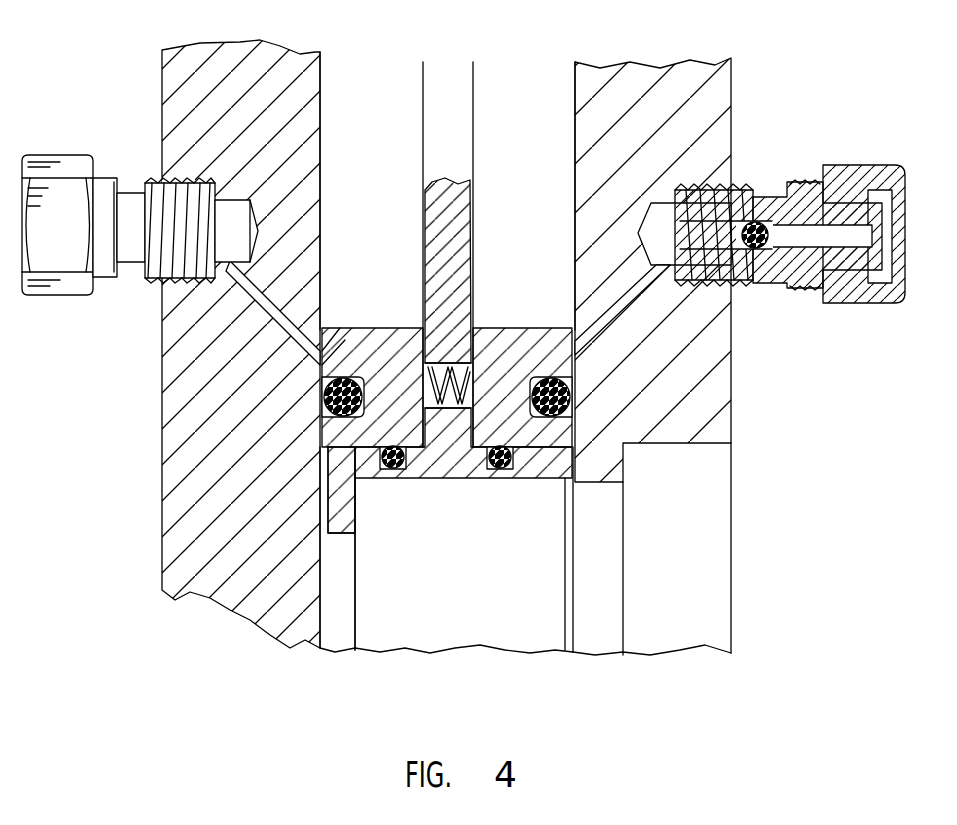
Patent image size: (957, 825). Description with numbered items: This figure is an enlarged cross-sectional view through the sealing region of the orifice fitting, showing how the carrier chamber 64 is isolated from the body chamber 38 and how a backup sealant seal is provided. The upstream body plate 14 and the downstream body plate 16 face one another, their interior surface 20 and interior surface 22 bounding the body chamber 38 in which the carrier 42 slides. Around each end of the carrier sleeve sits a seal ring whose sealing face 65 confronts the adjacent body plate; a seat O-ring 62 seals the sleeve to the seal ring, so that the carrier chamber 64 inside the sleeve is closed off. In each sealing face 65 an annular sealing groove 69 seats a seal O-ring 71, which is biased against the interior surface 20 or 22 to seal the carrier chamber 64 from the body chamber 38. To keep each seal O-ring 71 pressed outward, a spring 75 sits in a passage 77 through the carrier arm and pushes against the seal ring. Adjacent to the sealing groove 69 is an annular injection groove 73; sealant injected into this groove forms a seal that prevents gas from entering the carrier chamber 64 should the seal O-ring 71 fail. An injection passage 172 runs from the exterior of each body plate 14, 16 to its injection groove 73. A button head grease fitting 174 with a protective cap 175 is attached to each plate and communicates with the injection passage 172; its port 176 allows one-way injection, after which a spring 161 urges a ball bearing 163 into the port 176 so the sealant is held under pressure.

The upstream body plate 14 is at (160, 77).
The downstream body plate 16 is at (735, 85).
The interior surface 20 is at (322, 92).
The interior surface 22 is at (577, 68).
The body chamber 38 is at (374, 130).
The carrier 42 is at (474, 112).
The seat O-ring 62 is at (500, 470).
The carrier chamber 64 is at (501, 610).
The sealing face 65 is at (321, 378).
The sealing groove 69 is at (580, 447).
The seal O-ring 71 is at (318, 405).
The injection groove 73 is at (330, 355).
The spring 75 is at (458, 350).
The passage 77 is at (432, 362).
The spring 161 is at (650, 228).
The ball bearing 163 is at (757, 222).
The injection passage 172 is at (200, 318).
The button head grease fitting 174 is at (162, 183).
The protective cap 175 is at (37, 266).
The port 176 is at (847, 240).